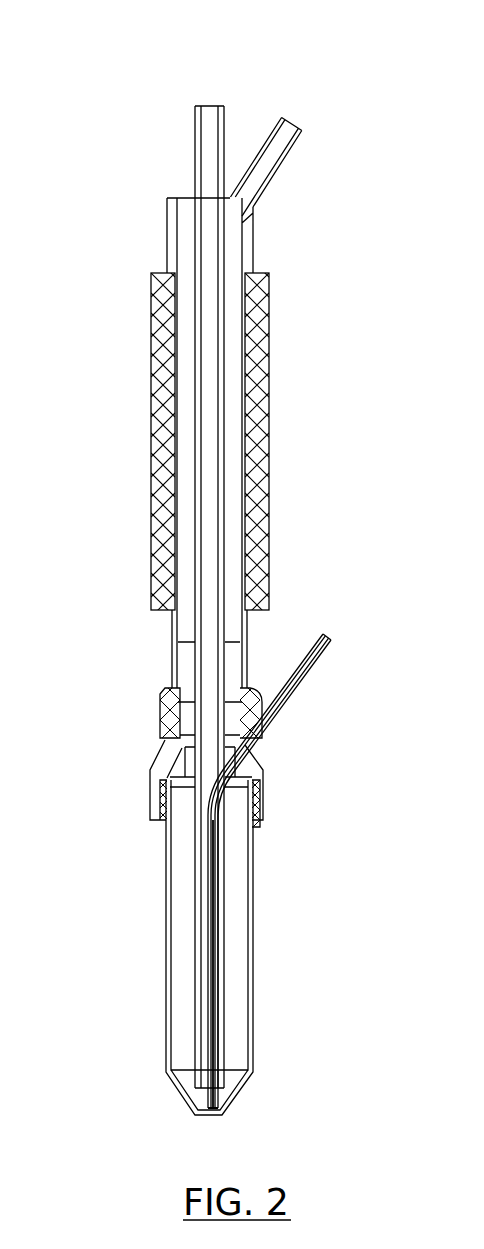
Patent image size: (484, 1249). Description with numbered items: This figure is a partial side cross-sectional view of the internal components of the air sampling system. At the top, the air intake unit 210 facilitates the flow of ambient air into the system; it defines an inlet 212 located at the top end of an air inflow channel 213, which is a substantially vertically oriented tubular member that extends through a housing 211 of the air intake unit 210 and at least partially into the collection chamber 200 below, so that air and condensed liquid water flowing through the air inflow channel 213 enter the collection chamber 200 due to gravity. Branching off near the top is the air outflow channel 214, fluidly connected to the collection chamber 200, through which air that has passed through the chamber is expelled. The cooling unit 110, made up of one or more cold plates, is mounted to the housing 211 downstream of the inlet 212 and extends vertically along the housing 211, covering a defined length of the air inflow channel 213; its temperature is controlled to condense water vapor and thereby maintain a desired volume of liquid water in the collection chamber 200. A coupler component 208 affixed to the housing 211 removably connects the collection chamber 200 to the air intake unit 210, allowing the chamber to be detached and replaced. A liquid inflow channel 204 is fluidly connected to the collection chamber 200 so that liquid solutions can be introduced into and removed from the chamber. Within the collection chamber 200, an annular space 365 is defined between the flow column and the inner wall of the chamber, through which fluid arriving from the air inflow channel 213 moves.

The cooling unit 110 is at (267, 372).
The collection chamber 200 is at (252, 917).
The liquid inflow channel 204 is at (313, 663).
The coupler component 208 is at (267, 783).
The air intake unit 210 is at (163, 250).
The housing 211 is at (255, 248).
The inlet 212 is at (222, 108).
The air inflow channel 213 is at (207, 151).
The air outflow channel 214 is at (303, 127).
The annular space 365 is at (232, 973).